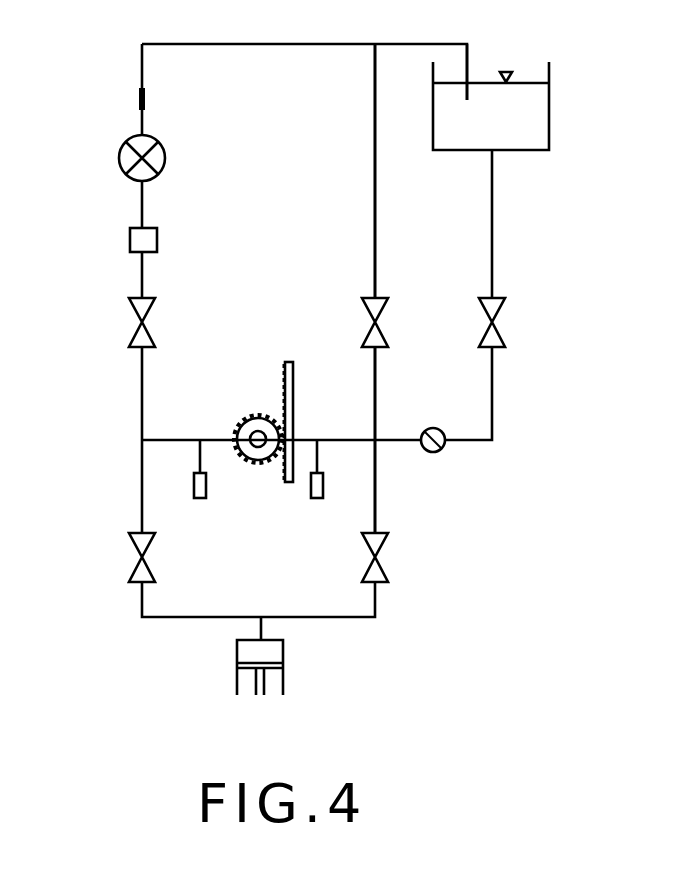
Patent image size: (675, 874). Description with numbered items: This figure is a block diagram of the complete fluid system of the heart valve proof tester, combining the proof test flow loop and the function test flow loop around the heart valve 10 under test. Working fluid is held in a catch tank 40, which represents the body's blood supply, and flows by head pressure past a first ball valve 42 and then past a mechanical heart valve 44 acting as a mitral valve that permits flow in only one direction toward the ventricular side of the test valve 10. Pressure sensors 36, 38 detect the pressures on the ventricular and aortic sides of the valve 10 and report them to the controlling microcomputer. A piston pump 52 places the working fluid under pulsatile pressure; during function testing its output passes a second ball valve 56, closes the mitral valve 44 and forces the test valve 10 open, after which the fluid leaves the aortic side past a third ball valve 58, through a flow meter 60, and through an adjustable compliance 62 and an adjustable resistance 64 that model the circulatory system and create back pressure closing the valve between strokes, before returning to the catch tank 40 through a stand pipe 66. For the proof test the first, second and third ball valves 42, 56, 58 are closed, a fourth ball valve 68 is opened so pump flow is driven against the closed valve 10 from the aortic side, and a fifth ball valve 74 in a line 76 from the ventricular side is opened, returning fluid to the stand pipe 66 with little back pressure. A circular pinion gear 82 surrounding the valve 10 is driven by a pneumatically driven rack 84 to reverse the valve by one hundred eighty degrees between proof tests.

The heart valve 10 is at (263, 425).
The pressure sensor 36 is at (310, 500).
The pressure sensor 38 is at (208, 500).
The catch tank 40 is at (530, 125).
The first ball valve 42 is at (500, 330).
The mechanical heart valve 44 is at (440, 448).
The piston pump 52 is at (280, 678).
The second ball valve 56 is at (385, 565).
The third ball valve 58 is at (140, 322).
The flow meter 60 is at (130, 238).
The adjustable compliance 62 is at (120, 155).
The adjustable resistance 64 is at (138, 92).
The stand pipe 66 is at (470, 52).
The fourth ball valve 68 is at (140, 557).
The fifth ball valve 74 is at (385, 330).
The line 76 is at (377, 208).
The circular pinion gear 82 is at (246, 421).
The pneumatically driven rack 84 is at (296, 394).